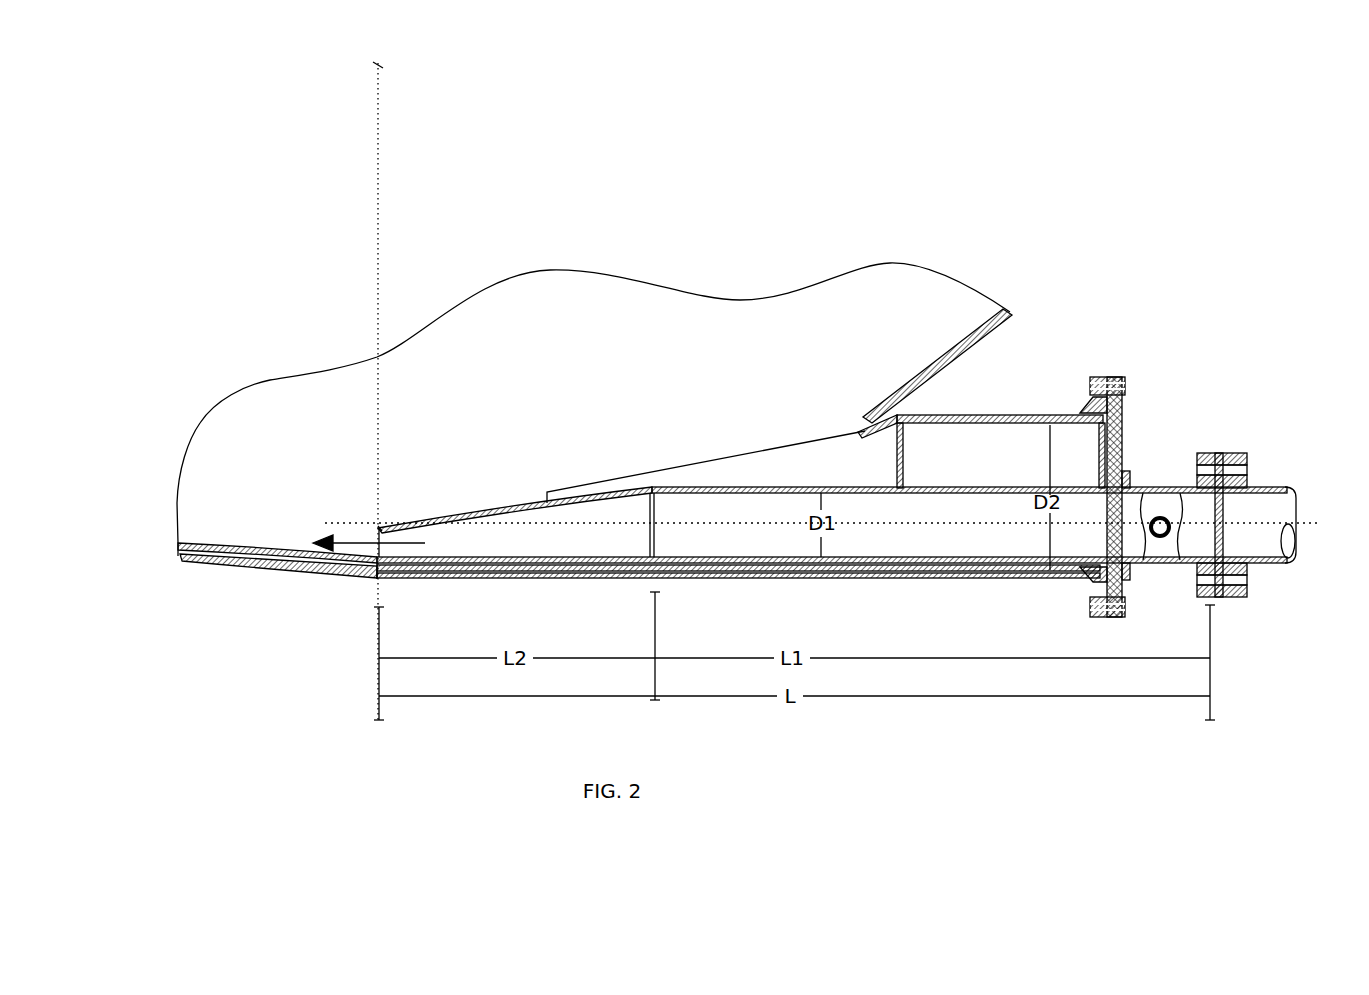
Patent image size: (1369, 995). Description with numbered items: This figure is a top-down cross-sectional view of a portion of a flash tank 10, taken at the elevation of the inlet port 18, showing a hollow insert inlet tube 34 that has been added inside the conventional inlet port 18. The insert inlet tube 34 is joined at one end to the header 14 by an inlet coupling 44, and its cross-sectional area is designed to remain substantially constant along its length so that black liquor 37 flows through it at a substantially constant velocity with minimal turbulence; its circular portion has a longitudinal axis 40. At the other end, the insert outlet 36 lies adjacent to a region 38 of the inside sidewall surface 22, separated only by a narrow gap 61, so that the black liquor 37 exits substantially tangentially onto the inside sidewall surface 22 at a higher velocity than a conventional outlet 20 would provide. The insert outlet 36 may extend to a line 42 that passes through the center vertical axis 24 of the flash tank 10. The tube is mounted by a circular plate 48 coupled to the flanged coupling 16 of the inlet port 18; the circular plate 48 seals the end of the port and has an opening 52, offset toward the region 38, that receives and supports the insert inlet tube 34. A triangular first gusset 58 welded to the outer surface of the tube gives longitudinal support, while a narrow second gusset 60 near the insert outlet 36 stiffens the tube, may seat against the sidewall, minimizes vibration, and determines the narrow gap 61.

The flash tank 10 is at (569, 332).
The header 14 is at (1267, 565).
The flanged coupling 16 is at (1090, 385).
The inlet port 18 is at (1002, 413).
The conventional outlet 20 is at (857, 427).
The inside sidewall surface 22 is at (963, 340).
The center vertical axis 24 is at (377, 68).
The insert inlet tube 34 is at (933, 545).
The insert outlet 36 is at (378, 528).
The black liquor 37 is at (375, 547).
The region of the inside sidewall surface 38 is at (360, 555).
The longitudinal axis 40 is at (682, 523).
The line 42 is at (380, 433).
The inlet coupling 44 is at (1222, 453).
The circular plate 48 is at (1122, 407).
The opening 52 is at (1133, 570).
The first gusset 58 is at (815, 465).
The second gusset 60 is at (483, 562).
The narrow gap 61 is at (387, 567).